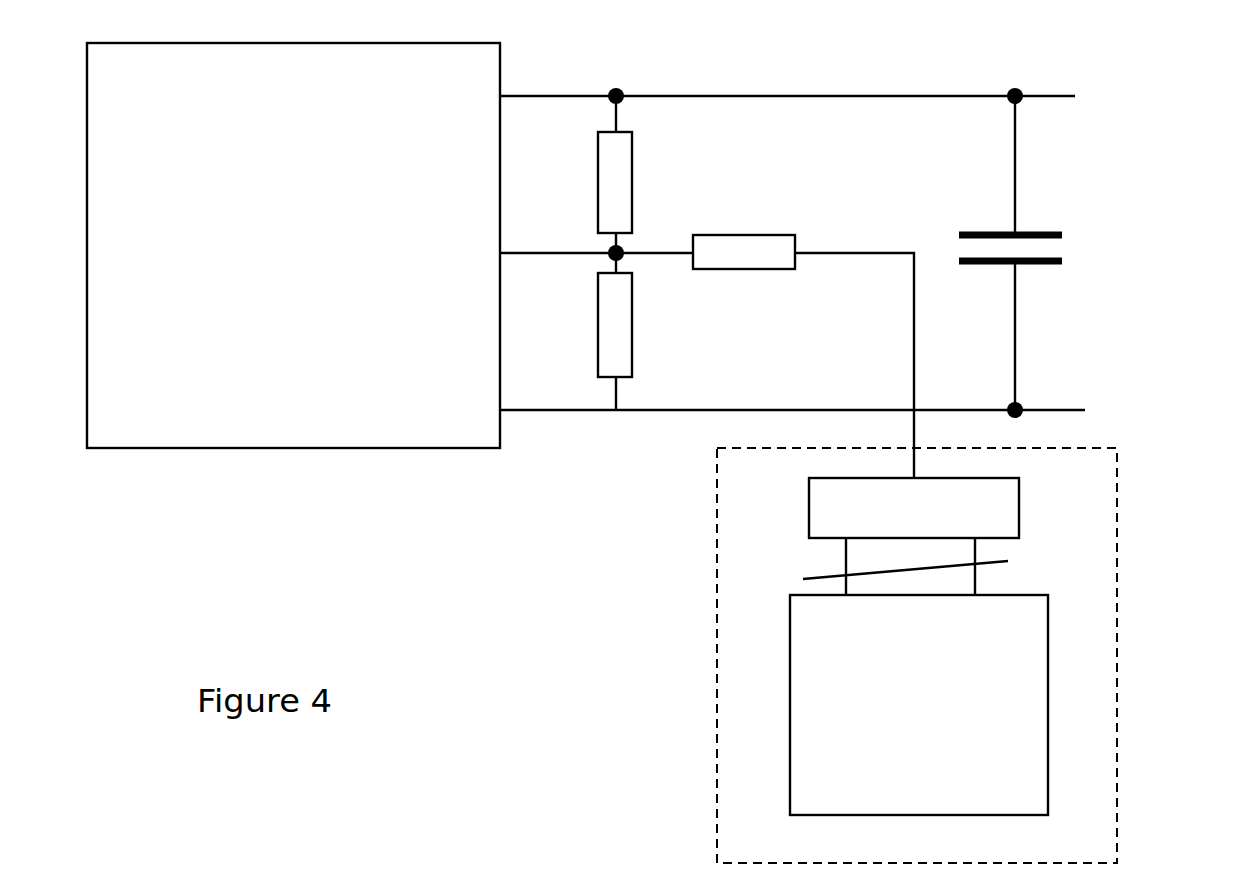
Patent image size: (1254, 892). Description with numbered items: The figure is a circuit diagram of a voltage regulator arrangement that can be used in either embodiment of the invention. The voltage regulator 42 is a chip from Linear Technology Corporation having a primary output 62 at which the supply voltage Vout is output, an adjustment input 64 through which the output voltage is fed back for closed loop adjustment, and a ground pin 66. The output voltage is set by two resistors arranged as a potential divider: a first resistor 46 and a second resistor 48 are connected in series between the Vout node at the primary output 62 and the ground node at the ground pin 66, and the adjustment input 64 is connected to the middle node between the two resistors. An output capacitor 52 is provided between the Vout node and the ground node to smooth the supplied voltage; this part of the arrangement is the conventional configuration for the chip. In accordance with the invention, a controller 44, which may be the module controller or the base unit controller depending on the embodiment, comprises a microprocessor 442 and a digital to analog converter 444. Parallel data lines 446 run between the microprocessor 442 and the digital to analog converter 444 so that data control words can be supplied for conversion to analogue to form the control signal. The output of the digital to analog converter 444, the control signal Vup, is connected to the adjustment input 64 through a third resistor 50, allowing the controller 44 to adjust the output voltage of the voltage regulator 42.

The voltage regulator 42 is at (293, 291).
The controller 44 is at (716, 707).
The first resistor R2 46 is at (632, 160).
The second resistor R1 48 is at (632, 357).
The resistor R3 50 is at (752, 230).
The output capacitor 52 is at (1035, 230).
The primary output 62 is at (500, 82).
The adjustment input 64 is at (500, 235).
The ground pin 66 is at (503, 428).
The microprocessor 442 is at (1048, 725).
The digital to analog converter 444 is at (1018, 502).
The parallel data lines 446 is at (1008, 576).